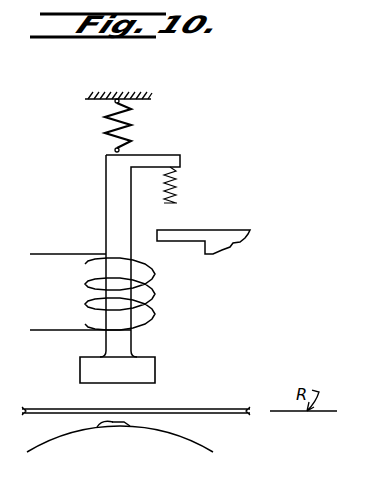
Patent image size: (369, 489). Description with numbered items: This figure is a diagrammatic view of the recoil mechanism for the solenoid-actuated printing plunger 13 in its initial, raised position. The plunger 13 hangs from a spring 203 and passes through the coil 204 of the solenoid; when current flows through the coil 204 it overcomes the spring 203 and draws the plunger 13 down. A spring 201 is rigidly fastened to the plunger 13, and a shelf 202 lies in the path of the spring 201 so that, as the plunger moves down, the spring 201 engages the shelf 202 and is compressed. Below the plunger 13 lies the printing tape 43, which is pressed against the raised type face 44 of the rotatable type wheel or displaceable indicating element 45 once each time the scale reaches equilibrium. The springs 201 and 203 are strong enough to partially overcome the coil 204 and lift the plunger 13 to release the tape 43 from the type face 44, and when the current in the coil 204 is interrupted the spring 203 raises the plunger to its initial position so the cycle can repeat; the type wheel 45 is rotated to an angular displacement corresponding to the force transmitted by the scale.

The spring 203 is at (131, 118).
The spring 201 is at (177, 189).
The shelf 202 is at (196, 230).
The coil 204 is at (85, 291).
The plunger 13 is at (147, 368).
The printing tape 43 is at (196, 409).
The raised type face 44 is at (104, 427).
The type wheel 45 is at (157, 430).